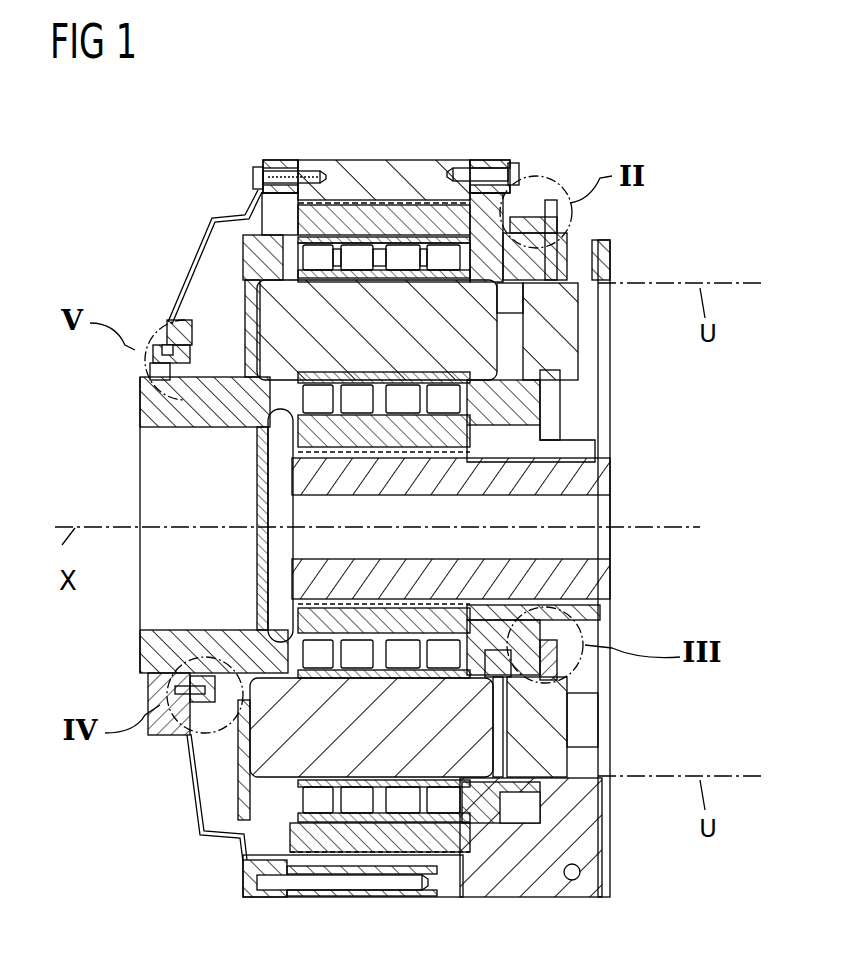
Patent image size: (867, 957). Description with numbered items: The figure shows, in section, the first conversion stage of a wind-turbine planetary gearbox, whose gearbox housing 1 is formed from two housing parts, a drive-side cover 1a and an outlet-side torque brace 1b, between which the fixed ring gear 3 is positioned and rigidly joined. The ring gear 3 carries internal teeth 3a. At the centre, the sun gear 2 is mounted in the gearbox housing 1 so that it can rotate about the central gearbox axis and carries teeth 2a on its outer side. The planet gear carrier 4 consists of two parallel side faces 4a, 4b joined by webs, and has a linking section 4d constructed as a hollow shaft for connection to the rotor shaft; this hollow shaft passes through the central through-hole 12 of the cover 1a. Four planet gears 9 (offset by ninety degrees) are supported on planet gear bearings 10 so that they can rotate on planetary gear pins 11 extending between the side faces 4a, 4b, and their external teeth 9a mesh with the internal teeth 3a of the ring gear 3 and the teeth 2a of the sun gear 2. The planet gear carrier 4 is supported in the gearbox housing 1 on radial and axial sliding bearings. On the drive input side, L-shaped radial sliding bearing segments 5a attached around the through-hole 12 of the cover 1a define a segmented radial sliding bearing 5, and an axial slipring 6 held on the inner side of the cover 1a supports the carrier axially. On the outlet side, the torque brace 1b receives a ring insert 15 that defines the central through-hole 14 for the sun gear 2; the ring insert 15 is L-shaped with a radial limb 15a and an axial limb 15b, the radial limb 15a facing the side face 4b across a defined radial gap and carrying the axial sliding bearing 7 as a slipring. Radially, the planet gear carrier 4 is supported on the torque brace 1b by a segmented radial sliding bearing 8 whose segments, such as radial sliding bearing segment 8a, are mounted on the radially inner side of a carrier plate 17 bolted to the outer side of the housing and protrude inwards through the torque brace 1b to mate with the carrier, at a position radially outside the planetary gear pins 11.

The gearbox housing 1 is at (600, 128).
The cover 1a is at (282, 165).
The torque brace 1b is at (500, 162).
The sun gear 2 is at (600, 470).
The teeth 2a is at (270, 606).
The ring gear 3 is at (412, 160).
The teeth 3a is at (385, 200).
The planet gear carrier 4 is at (245, 800).
The side face 4a is at (250, 262).
The side face 4b is at (570, 275).
The linking section 4d is at (155, 655).
The segmented radial sliding bearing 5 is at (205, 700).
The radial sliding bearing segment 5a is at (185, 705).
The axial sliding bearing 6 is at (160, 698).
The axial sliding bearing 7 is at (515, 665).
The segmented radial sliding bearing 8 is at (560, 225).
The radial sliding bearing segment 8a is at (560, 238).
The planet gear 9 is at (330, 840).
The external teeth 9a is at (398, 820).
The planet gear bearing 10 is at (245, 850).
The planetary gear pin 11 is at (480, 715).
The central through-hole 12 is at (185, 360).
The central through-hole 14 is at (535, 450).
The ring insert 15 is at (545, 645).
The radial limb 15a is at (555, 660).
The axial limb 15b is at (570, 612).
The carrier plate 17 is at (548, 200).